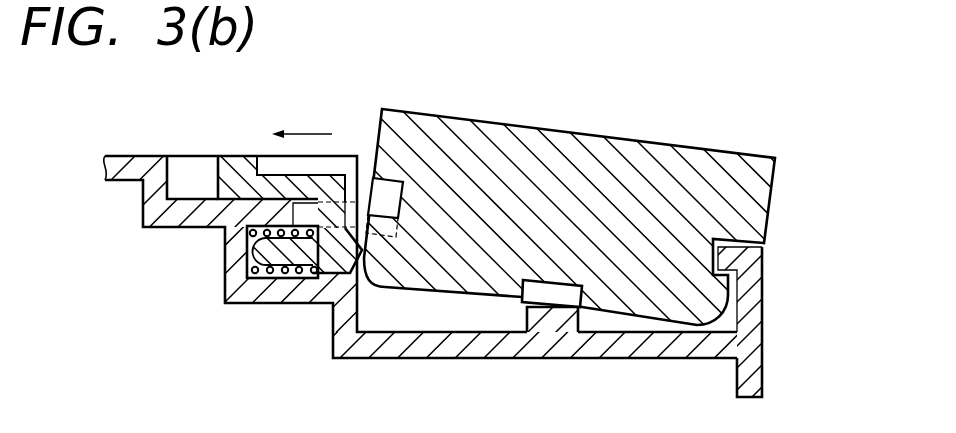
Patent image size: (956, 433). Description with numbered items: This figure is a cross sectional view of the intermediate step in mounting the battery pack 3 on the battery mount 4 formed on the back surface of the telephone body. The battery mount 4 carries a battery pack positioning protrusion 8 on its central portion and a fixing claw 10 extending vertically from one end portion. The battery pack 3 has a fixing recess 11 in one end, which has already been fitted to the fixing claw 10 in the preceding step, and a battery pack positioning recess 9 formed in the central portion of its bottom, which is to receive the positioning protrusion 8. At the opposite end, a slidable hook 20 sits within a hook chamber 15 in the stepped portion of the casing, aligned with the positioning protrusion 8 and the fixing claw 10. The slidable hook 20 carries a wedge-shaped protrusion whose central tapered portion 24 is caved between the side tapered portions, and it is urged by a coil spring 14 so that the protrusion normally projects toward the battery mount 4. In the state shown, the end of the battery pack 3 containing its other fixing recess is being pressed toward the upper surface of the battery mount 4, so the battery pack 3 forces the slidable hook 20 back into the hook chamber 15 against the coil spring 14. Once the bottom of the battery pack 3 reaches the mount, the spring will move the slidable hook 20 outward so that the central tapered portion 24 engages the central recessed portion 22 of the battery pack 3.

The battery pack 3 is at (548, 142).
The battery mount 4 is at (483, 313).
The battery pack positioning protrusion 8 is at (560, 313).
The battery pack positioning recess 9 is at (538, 279).
The fixing claw 10 is at (738, 258).
The fixing recess 11 is at (727, 238).
The coil spring 14 is at (273, 272).
The hook chamber 15 is at (248, 256).
The slidable hook 20 is at (240, 156).
The central recessed portion 22 is at (387, 192).
The central tapered portion 24 is at (366, 268).